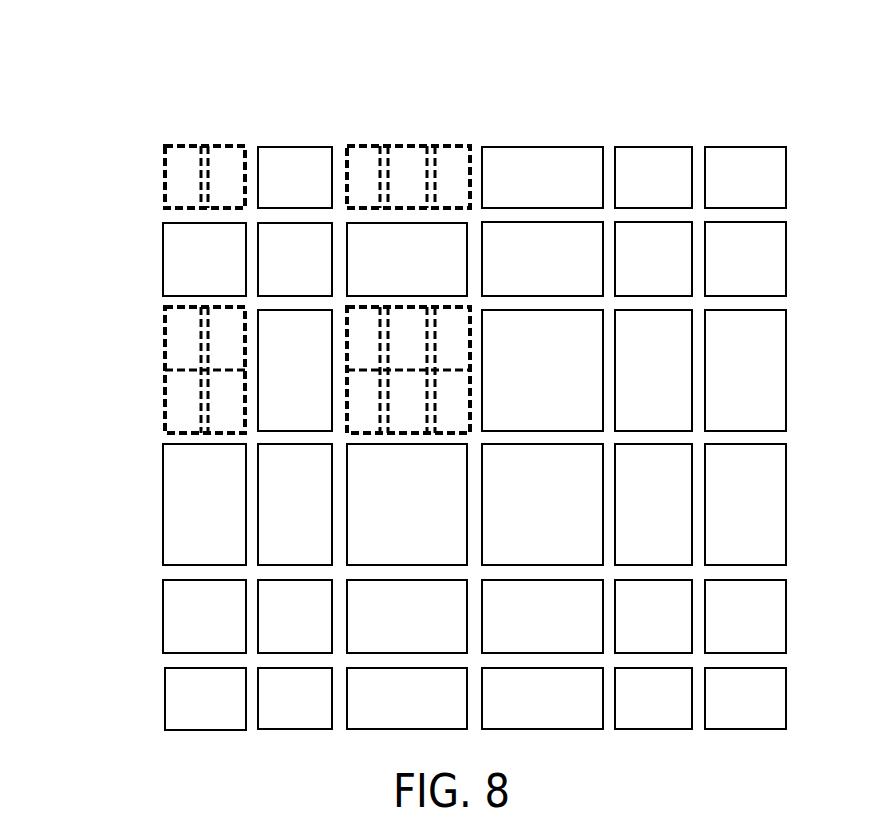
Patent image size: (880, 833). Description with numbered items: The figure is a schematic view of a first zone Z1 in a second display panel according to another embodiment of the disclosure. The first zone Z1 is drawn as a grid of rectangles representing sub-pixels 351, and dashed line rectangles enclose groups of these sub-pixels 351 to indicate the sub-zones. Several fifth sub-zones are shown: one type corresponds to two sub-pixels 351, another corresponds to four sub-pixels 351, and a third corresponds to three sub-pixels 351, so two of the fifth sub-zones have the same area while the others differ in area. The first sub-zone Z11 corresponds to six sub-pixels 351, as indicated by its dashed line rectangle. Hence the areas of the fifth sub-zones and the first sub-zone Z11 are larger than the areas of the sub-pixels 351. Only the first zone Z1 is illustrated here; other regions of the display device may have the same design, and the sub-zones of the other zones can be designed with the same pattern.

The first zone Z1 is at (458, 106).
The first sub-zone Z11 is at (370, 335).
The sub-pixel 351 is at (170, 145).